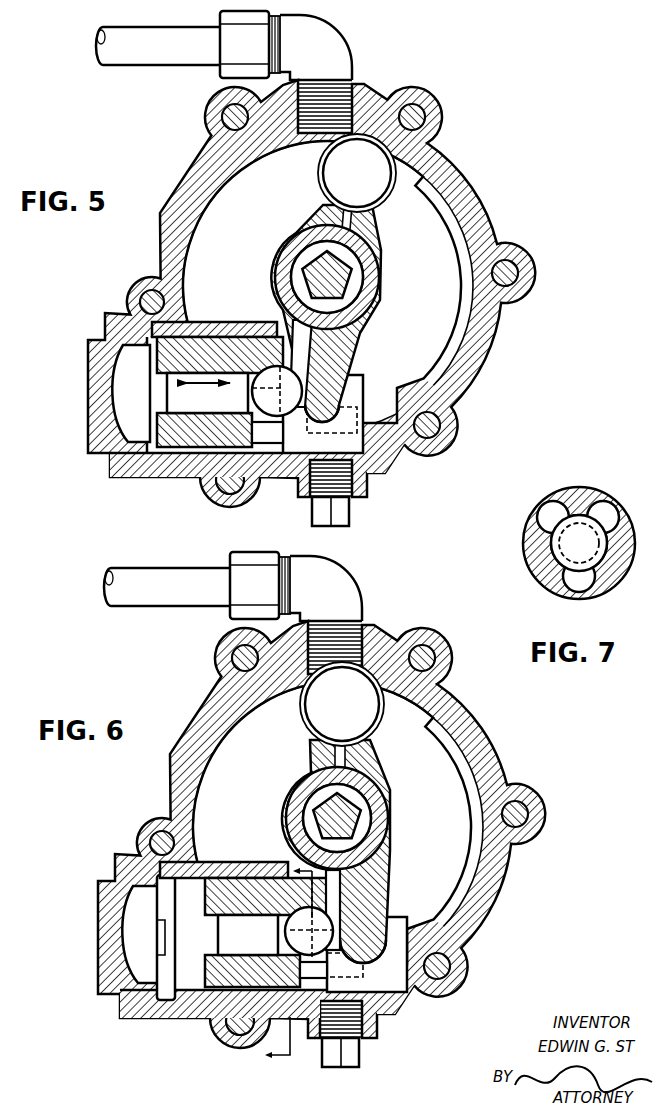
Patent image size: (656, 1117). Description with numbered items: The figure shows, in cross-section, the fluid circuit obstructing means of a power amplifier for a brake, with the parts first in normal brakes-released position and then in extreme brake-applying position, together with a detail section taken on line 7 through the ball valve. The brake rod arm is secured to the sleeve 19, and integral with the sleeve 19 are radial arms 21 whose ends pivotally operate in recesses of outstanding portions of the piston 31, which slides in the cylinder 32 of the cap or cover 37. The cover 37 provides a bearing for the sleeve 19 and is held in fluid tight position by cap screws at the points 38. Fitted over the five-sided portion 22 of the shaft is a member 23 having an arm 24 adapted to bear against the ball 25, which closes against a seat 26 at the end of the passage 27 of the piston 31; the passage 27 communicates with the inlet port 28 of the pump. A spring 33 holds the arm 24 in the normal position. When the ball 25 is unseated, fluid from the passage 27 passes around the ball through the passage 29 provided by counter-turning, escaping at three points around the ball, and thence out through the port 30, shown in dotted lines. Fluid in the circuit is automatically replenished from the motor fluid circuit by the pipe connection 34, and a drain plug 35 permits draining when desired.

In FIG. 5, the sleeve 19 is at (283, 252).
In FIG. 6, the sleeve 19 is at (290, 793).
In FIG. 5, the radial arms 21 is at (305, 343).
In FIG. 6, the radial arms 21 is at (338, 887).
In FIG. 5, the five-sided portion 22 is at (326, 274).
In FIG. 6, the five-sided portion 22 is at (337, 815).
In FIG. 5, the member 23 is at (355, 303).
In FIG. 6, the member 23 is at (362, 815).
In FIG. 5, the arm 24 is at (322, 403).
In FIG. 6, the arm 24 is at (363, 946).
In FIG. 5, the ball 25 is at (277, 391).
In FIG. 6, the ball 25 is at (309, 919).
In FIG. 5, the seat 26 is at (256, 372).
In FIG. 6, the seat 26 is at (307, 902).
In FIG. 7, the seat 26 is at (557, 523).
In FIG. 5, the passage 27 is at (207, 393).
In FIG. 6, the passage 27 is at (248, 935).
In FIG. 7, the passage 27 is at (579, 543).
In FIG. 5, the inlet port 28 is at (150, 372).
In FIG. 6, the inlet port 28 is at (165, 907).
In FIG. 5, the passage 29 is at (262, 430).
In FIG. 6, the passage 29 is at (312, 972).
In FIG. 7, the passage 29 is at (552, 518).
In FIG. 5, the port 30 is at (350, 445).
In FIG. 6, the port 30 is at (360, 977).
In FIG. 5, the piston 31 is at (190, 438).
In FIG. 6, the piston 31 is at (263, 948).
In FIG. 7, the piston 31 is at (568, 485).
In FIG. 5, the cylinder 32 is at (213, 334).
In FIG. 6, the cylinder 32 is at (242, 877).
In FIG. 5, the spring 33 is at (385, 160).
In FIG. 6, the spring 33 is at (377, 707).
In FIG. 5, the pipe connection 34 is at (152, 48).
In FIG. 6, the pipe connection 34 is at (157, 598).
In FIG. 5, the drain plug 35 is at (341, 512).
In FIG. 6, the drain plug 35 is at (352, 1053).
In FIG. 5, the cap or cover 37 is at (472, 343).
In FIG. 6, the cap or cover 37 is at (477, 898).
In FIG. 5, the cap screw points 38 is at (530, 256).
In FIG. 6, the cap screw points 38 is at (533, 800).
In FIG. 6, the bellcrank lever 7 is at (288, 970).